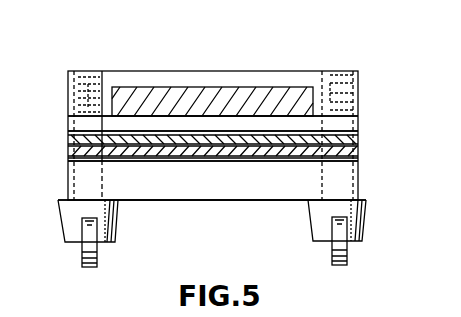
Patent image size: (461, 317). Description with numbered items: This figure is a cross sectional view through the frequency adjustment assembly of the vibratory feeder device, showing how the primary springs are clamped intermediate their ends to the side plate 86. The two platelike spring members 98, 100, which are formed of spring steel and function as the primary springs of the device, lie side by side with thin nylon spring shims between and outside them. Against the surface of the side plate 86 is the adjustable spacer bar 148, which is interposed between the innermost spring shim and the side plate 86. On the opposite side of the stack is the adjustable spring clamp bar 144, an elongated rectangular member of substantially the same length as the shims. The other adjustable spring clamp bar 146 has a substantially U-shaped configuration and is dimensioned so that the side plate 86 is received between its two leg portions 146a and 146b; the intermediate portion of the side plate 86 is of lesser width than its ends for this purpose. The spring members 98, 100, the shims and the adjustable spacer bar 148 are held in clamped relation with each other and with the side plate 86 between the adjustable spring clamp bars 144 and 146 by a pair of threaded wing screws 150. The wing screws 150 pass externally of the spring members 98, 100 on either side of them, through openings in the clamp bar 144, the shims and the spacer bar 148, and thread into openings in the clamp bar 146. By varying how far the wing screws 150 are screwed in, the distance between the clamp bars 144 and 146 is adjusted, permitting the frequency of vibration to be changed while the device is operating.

The adjustable spring clamp bar 146 is at (174, 71).
The leg portion 146a is at (358, 104).
The leg portion 146b is at (68, 100).
The side plate 86 is at (260, 90).
The adjustable spacer bar 148 is at (68, 127).
The spring member 98 is at (68, 140).
The spring member 100 is at (68, 152).
The adjustable spring clamp bar 144 is at (232, 203).
The threaded wing screw 150 is at (114, 244).